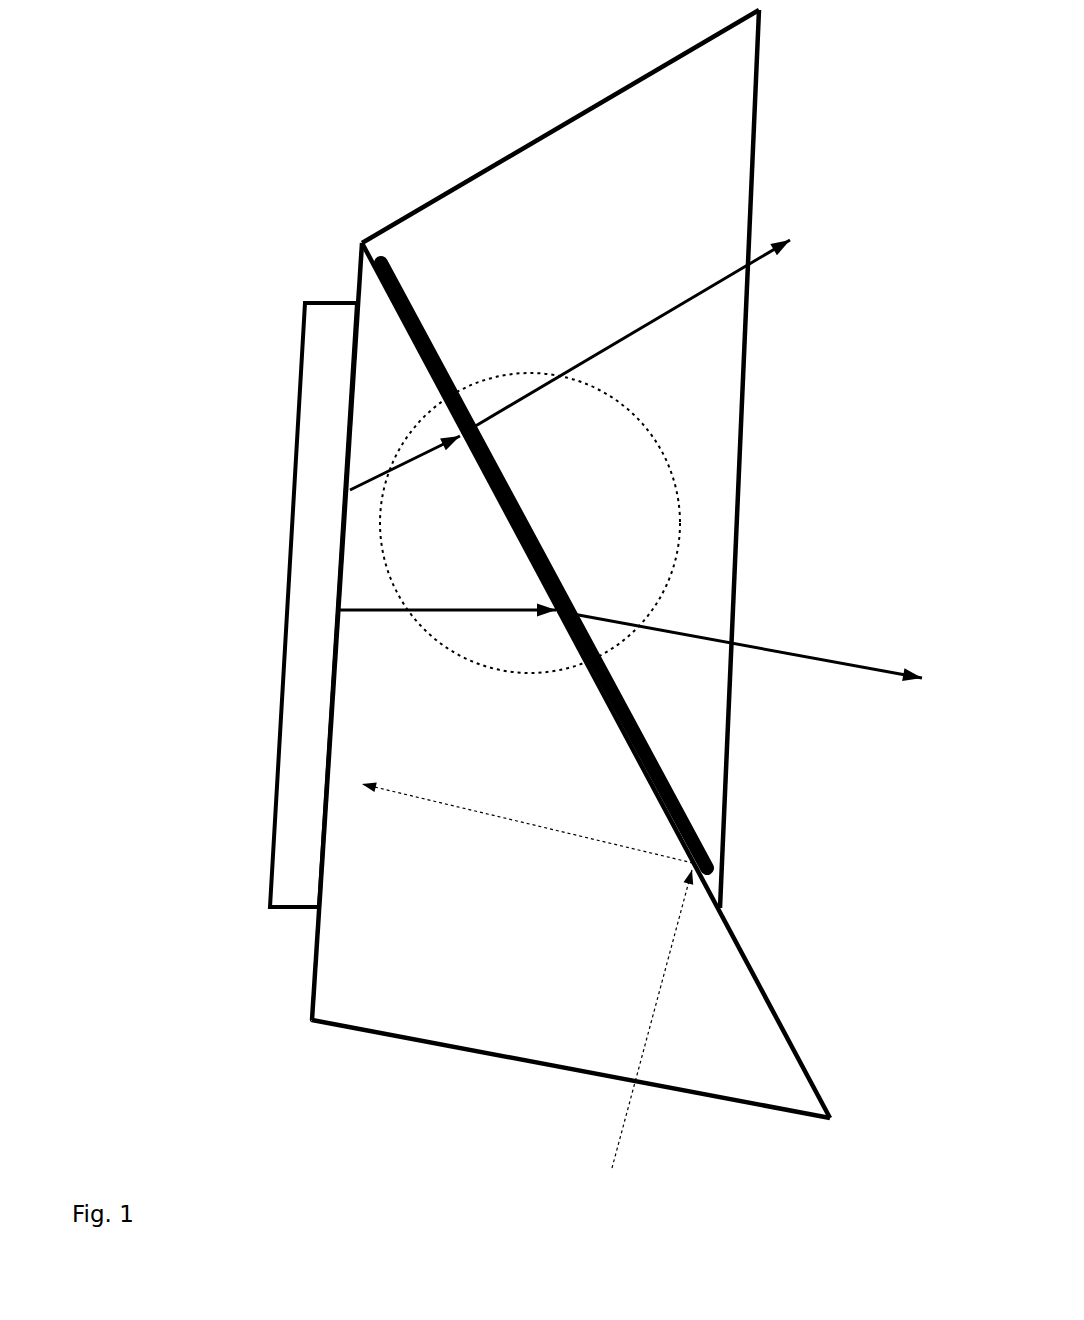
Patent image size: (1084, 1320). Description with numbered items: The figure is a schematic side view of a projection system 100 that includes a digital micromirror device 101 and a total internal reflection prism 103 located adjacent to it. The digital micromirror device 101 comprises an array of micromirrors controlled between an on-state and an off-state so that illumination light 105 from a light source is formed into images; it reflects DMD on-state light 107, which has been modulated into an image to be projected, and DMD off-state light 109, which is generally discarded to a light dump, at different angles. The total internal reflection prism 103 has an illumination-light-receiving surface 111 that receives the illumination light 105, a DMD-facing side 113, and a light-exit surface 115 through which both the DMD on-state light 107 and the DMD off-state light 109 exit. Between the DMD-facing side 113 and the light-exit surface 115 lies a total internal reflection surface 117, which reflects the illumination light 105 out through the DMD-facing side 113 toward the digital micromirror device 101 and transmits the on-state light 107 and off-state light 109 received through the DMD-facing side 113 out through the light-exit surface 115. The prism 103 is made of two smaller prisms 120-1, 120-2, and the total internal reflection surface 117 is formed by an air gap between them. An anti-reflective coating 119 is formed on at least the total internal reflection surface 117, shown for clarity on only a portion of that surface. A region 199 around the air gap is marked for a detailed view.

The projection system 100 is at (175, 933).
The digital micromirror device 101 is at (268, 855).
The total internal reflection prism 103 is at (302, 1026).
The illumination light 105 is at (623, 1113).
The DMD on-state light 107 is at (503, 612).
The DMD off-state light 109 is at (448, 438).
The illumination-light-receiving surface 111 is at (410, 1042).
The DMD-facing side 113 is at (313, 950).
The light-exit surface 115 is at (730, 803).
The total internal reflection surface 117 is at (604, 710).
The anti-reflective coating 119 is at (385, 268).
The first prism 120-1 is at (442, 986).
The second prism 120-2 is at (707, 152).
The region 199 is at (630, 408).